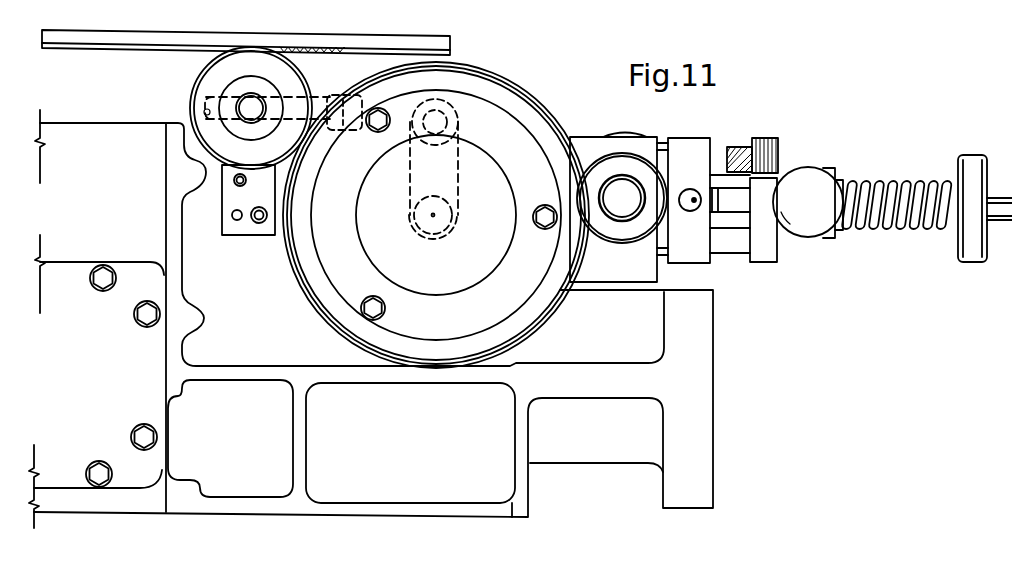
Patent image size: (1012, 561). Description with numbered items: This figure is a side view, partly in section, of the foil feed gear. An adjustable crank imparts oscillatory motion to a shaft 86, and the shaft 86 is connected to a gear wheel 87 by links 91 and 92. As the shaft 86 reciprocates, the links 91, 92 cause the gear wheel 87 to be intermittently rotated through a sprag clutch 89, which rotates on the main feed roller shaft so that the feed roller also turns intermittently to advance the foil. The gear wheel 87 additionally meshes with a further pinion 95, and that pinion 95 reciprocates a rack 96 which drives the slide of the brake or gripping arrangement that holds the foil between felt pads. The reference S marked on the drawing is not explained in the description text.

The rack 96 is at (396, 42).
The pinion 95 is at (211, 78).
The shaft 86 is at (298, 101).
The gear wheel 87 is at (548, 119).
The link 91 is at (357, 131).
The link 92 is at (461, 200).
The sprag clutch 89 is at (627, 237).
The housing stand S is at (760, 366).